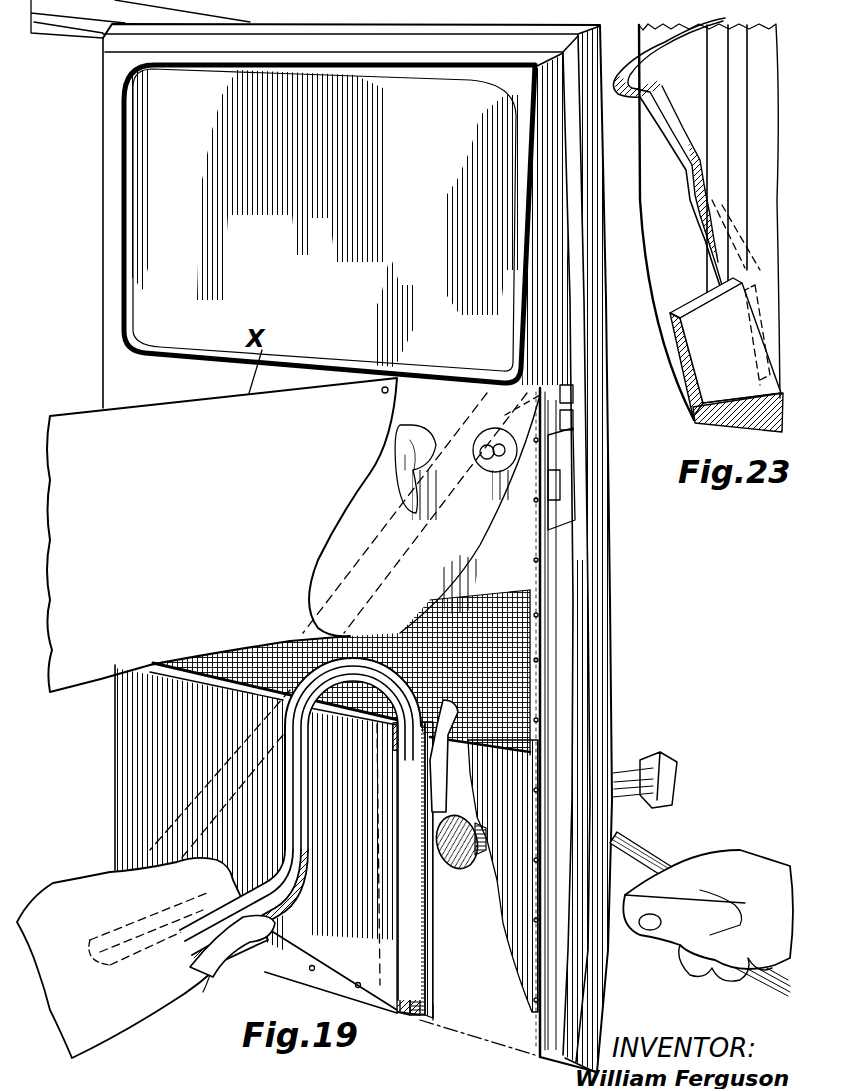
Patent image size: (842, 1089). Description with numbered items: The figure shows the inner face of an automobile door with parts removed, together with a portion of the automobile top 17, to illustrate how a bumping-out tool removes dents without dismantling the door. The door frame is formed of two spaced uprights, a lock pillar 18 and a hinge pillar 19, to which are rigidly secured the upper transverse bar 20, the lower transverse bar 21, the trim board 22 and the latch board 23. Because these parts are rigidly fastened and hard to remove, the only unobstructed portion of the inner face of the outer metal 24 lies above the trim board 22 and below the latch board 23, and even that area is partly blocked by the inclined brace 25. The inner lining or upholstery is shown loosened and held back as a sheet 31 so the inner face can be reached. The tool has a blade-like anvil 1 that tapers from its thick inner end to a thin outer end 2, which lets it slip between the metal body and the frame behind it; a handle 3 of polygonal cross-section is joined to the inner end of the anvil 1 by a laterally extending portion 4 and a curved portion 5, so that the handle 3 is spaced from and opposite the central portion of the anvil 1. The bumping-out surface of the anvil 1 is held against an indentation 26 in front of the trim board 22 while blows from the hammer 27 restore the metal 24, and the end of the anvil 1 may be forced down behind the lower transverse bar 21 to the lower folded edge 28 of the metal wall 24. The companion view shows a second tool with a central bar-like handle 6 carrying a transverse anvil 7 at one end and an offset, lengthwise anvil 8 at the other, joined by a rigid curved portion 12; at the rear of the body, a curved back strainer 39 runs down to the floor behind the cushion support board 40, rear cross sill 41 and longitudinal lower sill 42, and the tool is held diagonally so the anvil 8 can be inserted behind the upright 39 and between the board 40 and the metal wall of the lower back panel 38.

In FIG. 19, the anvil 1 is at (440, 772).
In FIG. 19, the outer end of anvil 2 is at (365, 1000).
In FIG. 19, the handle 3 is at (213, 962).
In FIG. 19, the laterally extending portion 4 is at (309, 777).
In FIG. 19, the curved portion 5 is at (345, 760).
In FIG. 23, the handle 6 is at (672, 140).
In FIG. 23, the anvil 7 is at (690, 32).
In FIG. 23, the anvil 8 is at (700, 232).
In FIG. 23, the curved portion 12 is at (688, 180).
In FIG. 19, the automobile top 17 is at (72, 33).
In FIG. 19, the lock pillar 18 is at (550, 320).
In FIG. 19, the hinge pillar 19 is at (127, 312).
In FIG. 19, the upper transverse bar 20 is at (490, 80).
In FIG. 19, the lower transverse bar 21 is at (410, 1017).
In FIG. 19, the trim board 22 is at (338, 937).
In FIG. 19, the latch board 23 is at (562, 598).
In FIG. 19, the outer metal 24 is at (560, 673).
In FIG. 19, the inclined brace 25 is at (290, 660).
In FIG. 19, the indentation 26 is at (443, 810).
In FIG. 19, the hammer 27 is at (467, 870).
In FIG. 19, the lower folded edge 28 is at (430, 1022).
In FIG. 19, the trim sheet 31 is at (125, 351).
In FIG. 23, the lower back panel 38 is at (642, 247).
In FIG. 23, the back strainer 39 is at (708, 88).
In FIG. 23, the cushion support board 40 is at (700, 303).
In FIG. 23, the rear cross sill 41 is at (736, 392).
In FIG. 23, the longitudinal lower sill 42 is at (760, 428).